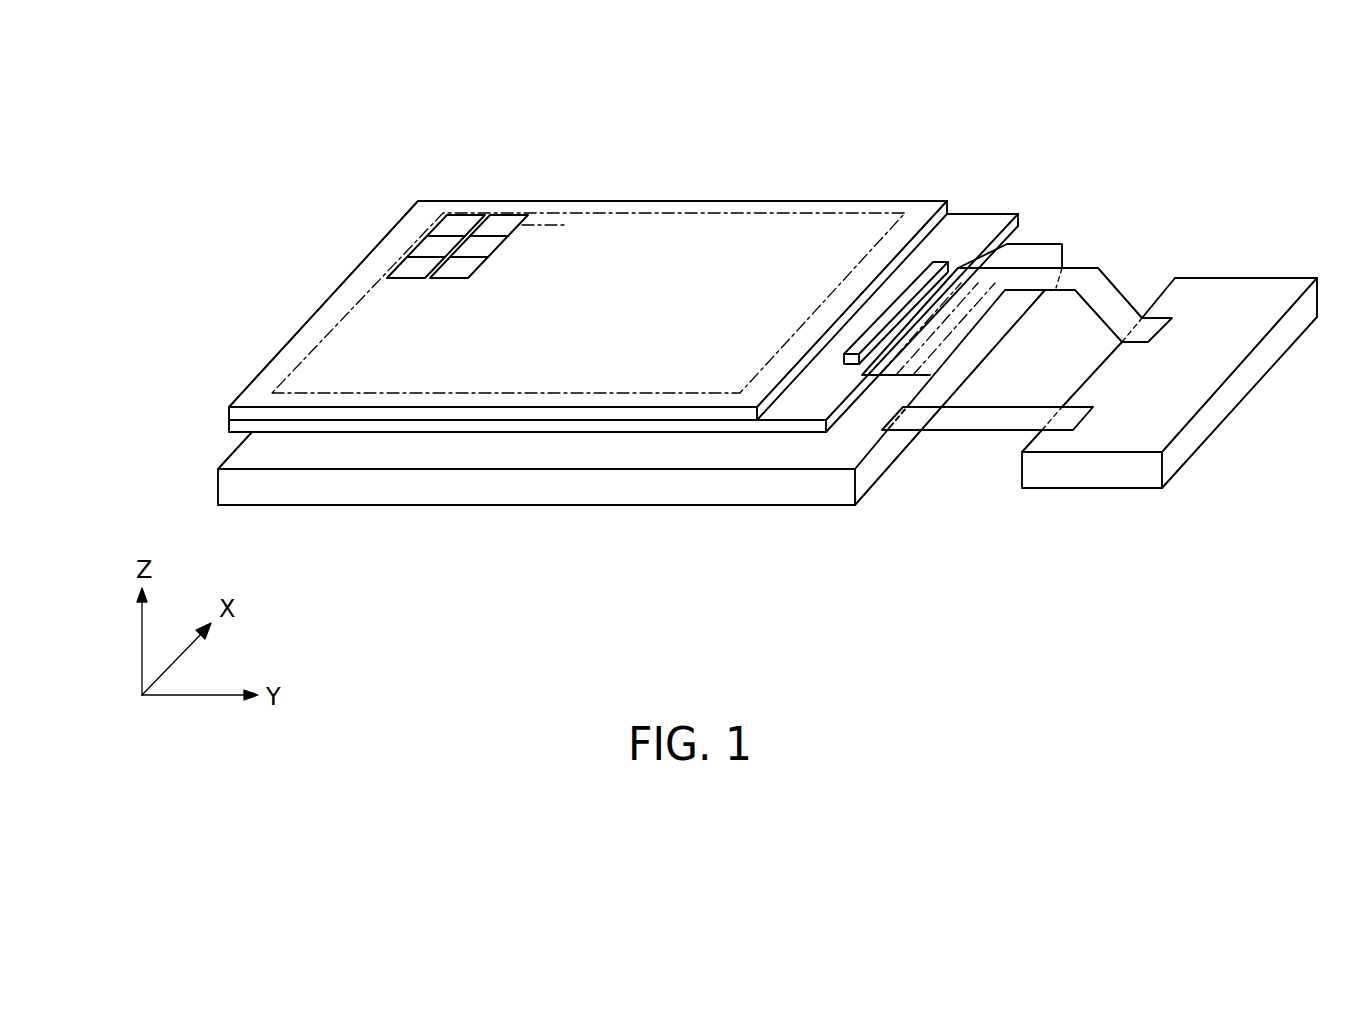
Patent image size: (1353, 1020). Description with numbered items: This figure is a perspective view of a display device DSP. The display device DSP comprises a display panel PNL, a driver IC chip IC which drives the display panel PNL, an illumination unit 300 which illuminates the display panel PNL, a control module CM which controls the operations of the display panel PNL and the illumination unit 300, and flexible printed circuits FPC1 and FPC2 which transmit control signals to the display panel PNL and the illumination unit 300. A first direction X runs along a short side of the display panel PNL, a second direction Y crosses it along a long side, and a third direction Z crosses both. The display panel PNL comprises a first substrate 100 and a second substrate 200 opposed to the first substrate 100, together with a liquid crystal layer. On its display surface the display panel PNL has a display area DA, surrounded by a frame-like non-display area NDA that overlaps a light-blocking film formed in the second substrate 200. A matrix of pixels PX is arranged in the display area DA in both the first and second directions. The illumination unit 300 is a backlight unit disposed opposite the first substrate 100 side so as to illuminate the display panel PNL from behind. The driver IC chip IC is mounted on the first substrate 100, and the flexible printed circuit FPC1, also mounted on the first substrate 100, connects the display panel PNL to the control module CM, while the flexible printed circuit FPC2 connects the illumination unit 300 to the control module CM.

The display device DSP is at (300, 173).
The display panel PNL is at (218, 416).
The second substrate 200 is at (920, 200).
The first substrate 100 is at (1000, 213).
The illumination unit 300 is at (778, 505).
The display area DA is at (598, 218).
The non-display area NDA is at (693, 200).
The pixels PX is at (406, 248).
The driver IC chip IC is at (850, 368).
The flexible printed circuit FPC1 is at (1087, 266).
The flexible printed circuit FPC2 is at (965, 432).
The control module CM is at (1240, 278).